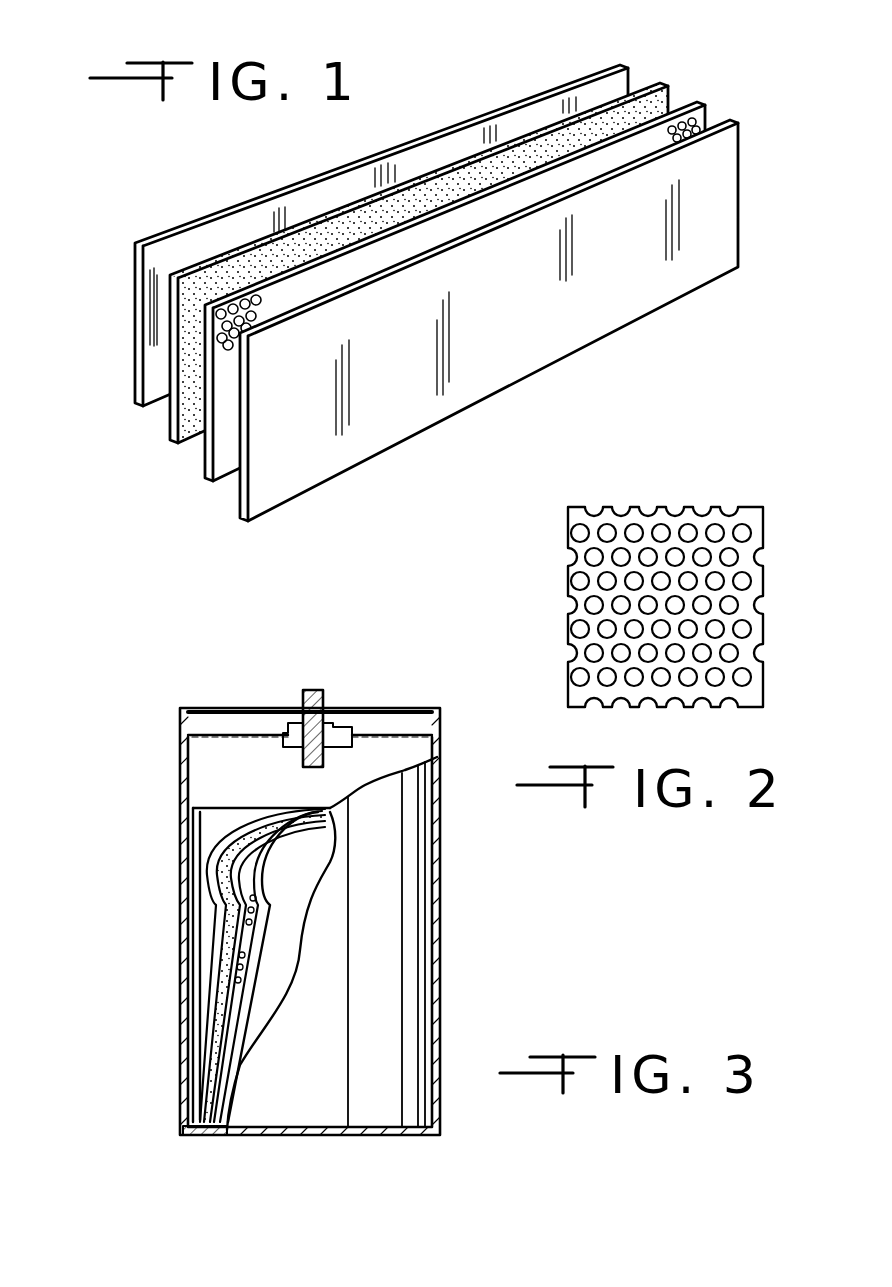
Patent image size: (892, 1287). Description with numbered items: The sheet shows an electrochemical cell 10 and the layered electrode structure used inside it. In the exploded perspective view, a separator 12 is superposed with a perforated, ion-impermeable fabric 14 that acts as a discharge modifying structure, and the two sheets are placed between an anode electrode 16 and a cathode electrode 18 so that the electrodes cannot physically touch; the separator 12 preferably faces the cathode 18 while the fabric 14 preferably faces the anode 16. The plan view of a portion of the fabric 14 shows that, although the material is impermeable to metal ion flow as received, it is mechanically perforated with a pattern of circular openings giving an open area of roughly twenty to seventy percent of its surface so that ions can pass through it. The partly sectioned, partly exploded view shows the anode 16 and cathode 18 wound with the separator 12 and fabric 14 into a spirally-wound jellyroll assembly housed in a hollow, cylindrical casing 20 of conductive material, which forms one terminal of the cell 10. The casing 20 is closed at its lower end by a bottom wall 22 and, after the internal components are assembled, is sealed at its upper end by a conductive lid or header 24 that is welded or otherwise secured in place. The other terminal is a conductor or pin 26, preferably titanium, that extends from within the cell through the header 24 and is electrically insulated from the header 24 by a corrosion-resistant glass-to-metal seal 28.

In FIG. 3, the electrochemical cell 10 is at (277, 912).
In FIG. 1, the separator 12 is at (667, 108).
In FIG. 3, the separator 12 is at (232, 908).
In FIG. 1, the perforated ion-impermeable fabric 14 is at (702, 115).
In FIG. 2, the perforated ion-impermeable fabric 14 is at (755, 522).
In FIG. 3, the perforated ion-impermeable fabric 14 is at (248, 945).
In FIG. 1, the anode electrode 16 is at (707, 183).
In FIG. 3, the anode electrode 16 is at (328, 866).
In FIG. 1, the cathode electrode 18 is at (617, 87).
In FIG. 3, the cathode electrode 18 is at (215, 940).
In FIG. 3, the casing 20 is at (440, 745).
In FIG. 3, the bottom wall 22 is at (203, 1140).
In FIG. 3, the header 24 is at (373, 727).
In FIG. 3, the conductor pin 26 is at (323, 695).
In FIG. 3, the glass-to-metal seal 28 is at (295, 725).